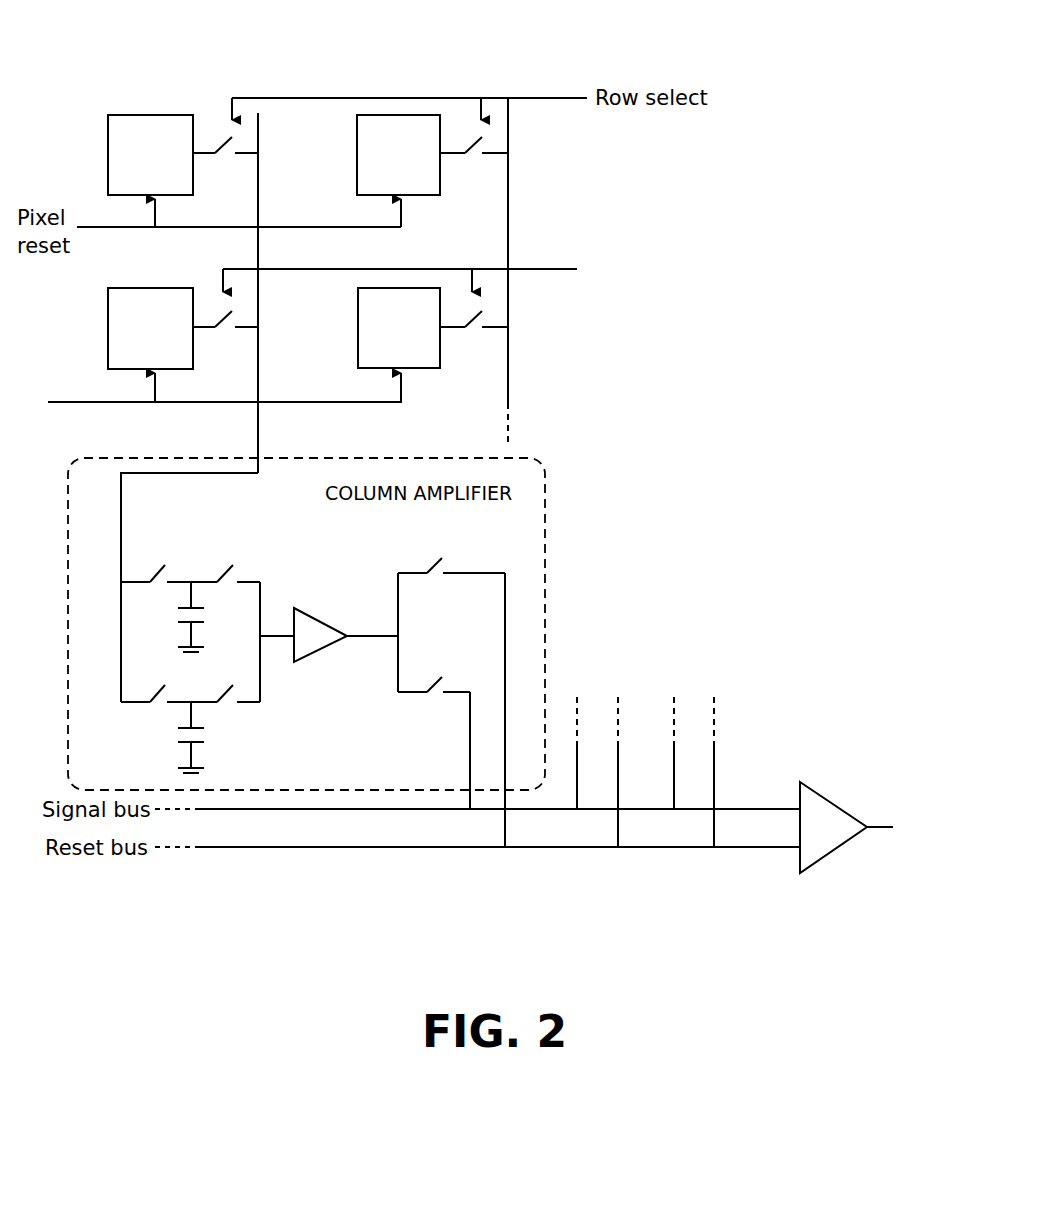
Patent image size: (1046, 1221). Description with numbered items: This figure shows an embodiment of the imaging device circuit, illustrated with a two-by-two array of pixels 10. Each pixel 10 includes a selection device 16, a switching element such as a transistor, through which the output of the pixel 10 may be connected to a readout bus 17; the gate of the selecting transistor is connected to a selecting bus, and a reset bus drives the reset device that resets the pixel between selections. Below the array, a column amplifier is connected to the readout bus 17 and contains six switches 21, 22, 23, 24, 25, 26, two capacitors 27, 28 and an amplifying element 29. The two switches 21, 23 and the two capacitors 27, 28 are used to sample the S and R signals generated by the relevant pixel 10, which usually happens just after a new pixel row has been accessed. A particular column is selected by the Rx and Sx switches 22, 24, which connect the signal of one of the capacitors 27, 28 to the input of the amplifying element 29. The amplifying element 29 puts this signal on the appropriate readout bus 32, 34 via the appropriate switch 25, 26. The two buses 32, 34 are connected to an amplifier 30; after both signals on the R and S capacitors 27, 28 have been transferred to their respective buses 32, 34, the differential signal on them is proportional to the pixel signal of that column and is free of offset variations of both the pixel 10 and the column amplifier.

The pixel 10 is at (130, 115).
The selection device 16 is at (224, 160).
The readout bus 17 is at (259, 412).
The switch 21 is at (168, 572).
The Rx switch 22 is at (237, 572).
The switch 23 is at (160, 707).
The Sx switch 24 is at (228, 707).
The switch 25 is at (432, 578).
The switch 26 is at (435, 697).
The capacitor 27 is at (207, 613).
The capacitor 28 is at (176, 736).
The amplifying element 29 is at (313, 630).
The amplifier 30 is at (817, 810).
The bus 32 is at (297, 811).
The bus 34 is at (438, 849).